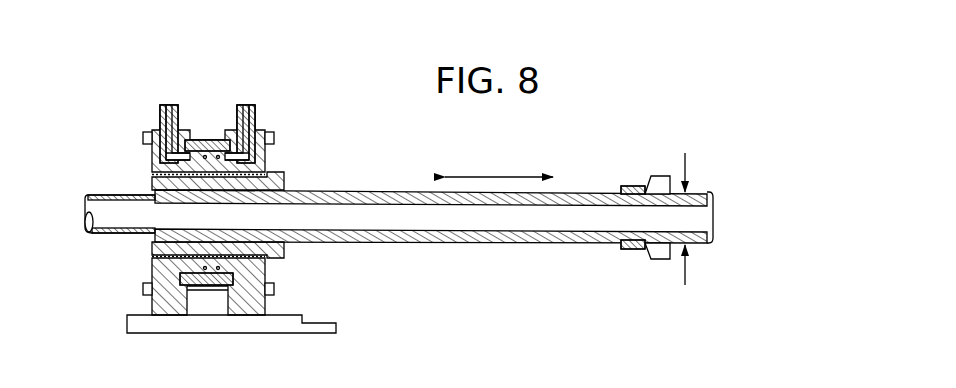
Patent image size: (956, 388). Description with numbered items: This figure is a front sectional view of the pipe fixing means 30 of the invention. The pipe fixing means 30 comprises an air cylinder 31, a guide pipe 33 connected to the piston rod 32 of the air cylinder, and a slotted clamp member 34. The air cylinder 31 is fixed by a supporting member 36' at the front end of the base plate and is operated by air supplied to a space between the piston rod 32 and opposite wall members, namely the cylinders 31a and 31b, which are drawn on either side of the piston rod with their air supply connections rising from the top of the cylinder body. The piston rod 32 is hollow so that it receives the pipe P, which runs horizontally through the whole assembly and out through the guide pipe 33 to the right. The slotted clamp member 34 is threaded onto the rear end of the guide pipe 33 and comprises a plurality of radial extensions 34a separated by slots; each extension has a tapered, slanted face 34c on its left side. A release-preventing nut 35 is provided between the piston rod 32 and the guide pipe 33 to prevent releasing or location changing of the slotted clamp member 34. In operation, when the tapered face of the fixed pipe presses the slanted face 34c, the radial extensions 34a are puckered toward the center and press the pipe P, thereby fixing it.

The pipe P is at (85, 198).
The pipe fixing means 30 is at (353, 269).
The air cylinder 31 is at (197, 140).
The cylinder 31a is at (151, 132).
The cylinder 31b is at (255, 132).
The piston rod 32 is at (152, 248).
The guide pipe 33 is at (395, 192).
The slotted clamp member 34 is at (652, 176).
The radial extensions 34a is at (661, 260).
The slanted face 34c is at (648, 252).
The release-preventing nut 35 is at (284, 178).
The supporting member 36' is at (202, 340).